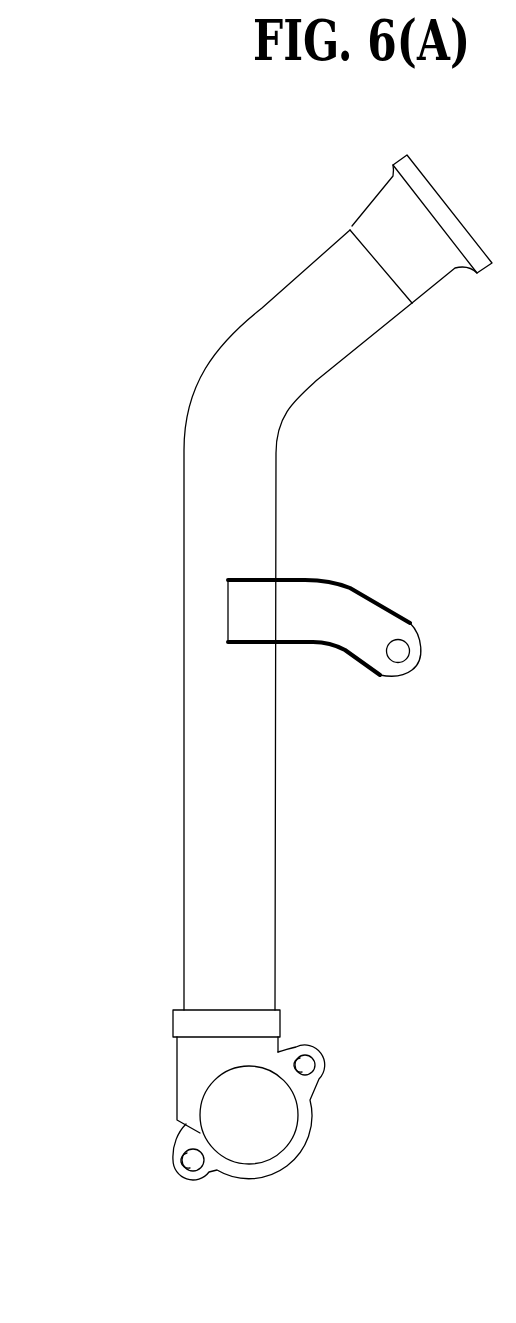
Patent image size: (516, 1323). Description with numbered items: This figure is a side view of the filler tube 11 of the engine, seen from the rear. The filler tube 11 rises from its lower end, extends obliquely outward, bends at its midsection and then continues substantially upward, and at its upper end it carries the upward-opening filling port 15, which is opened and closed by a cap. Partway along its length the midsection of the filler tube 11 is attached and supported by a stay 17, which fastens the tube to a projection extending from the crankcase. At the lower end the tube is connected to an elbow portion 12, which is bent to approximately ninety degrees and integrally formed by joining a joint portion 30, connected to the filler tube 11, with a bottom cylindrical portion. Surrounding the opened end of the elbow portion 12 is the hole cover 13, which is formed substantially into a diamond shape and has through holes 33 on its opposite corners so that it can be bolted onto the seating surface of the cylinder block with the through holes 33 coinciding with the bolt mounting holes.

The filler tube 11 is at (200, 458).
The elbow portion 12 is at (168, 1063).
The hole cover 13 is at (300, 1155).
The filling port 15 is at (377, 206).
The stay 17 is at (330, 580).
The joint portion 30 is at (228, 1045).
The through holes 33 is at (313, 1047).